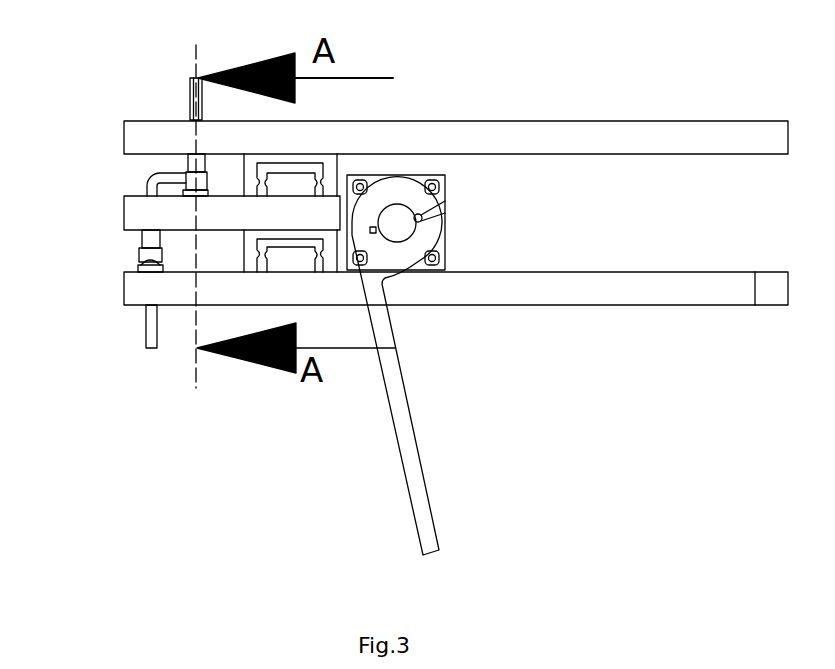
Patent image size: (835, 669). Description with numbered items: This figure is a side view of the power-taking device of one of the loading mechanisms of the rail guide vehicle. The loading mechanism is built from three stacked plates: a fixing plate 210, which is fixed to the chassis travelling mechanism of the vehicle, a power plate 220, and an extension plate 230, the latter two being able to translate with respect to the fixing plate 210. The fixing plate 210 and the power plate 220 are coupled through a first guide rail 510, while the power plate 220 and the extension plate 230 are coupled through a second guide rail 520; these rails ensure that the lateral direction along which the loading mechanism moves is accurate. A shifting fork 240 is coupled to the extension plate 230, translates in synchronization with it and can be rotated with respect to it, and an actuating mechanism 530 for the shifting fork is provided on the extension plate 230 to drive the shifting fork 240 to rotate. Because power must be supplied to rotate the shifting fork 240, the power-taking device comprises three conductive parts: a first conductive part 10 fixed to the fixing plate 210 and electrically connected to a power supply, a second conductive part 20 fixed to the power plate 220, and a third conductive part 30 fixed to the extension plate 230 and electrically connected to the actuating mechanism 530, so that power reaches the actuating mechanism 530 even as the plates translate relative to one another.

The first conductive part 10 is at (177, 105).
The second conductive part 20 is at (130, 182).
The third conductive part 30 is at (132, 260).
The fixing plate 210 is at (512, 133).
The power plate 220 is at (137, 217).
The extension plate 230 is at (540, 295).
The shifting fork 240 is at (407, 458).
The first guide rail 510 is at (298, 180).
The second guide rail 520 is at (298, 258).
The actuating mechanism for the shifting fork 530 is at (445, 187).